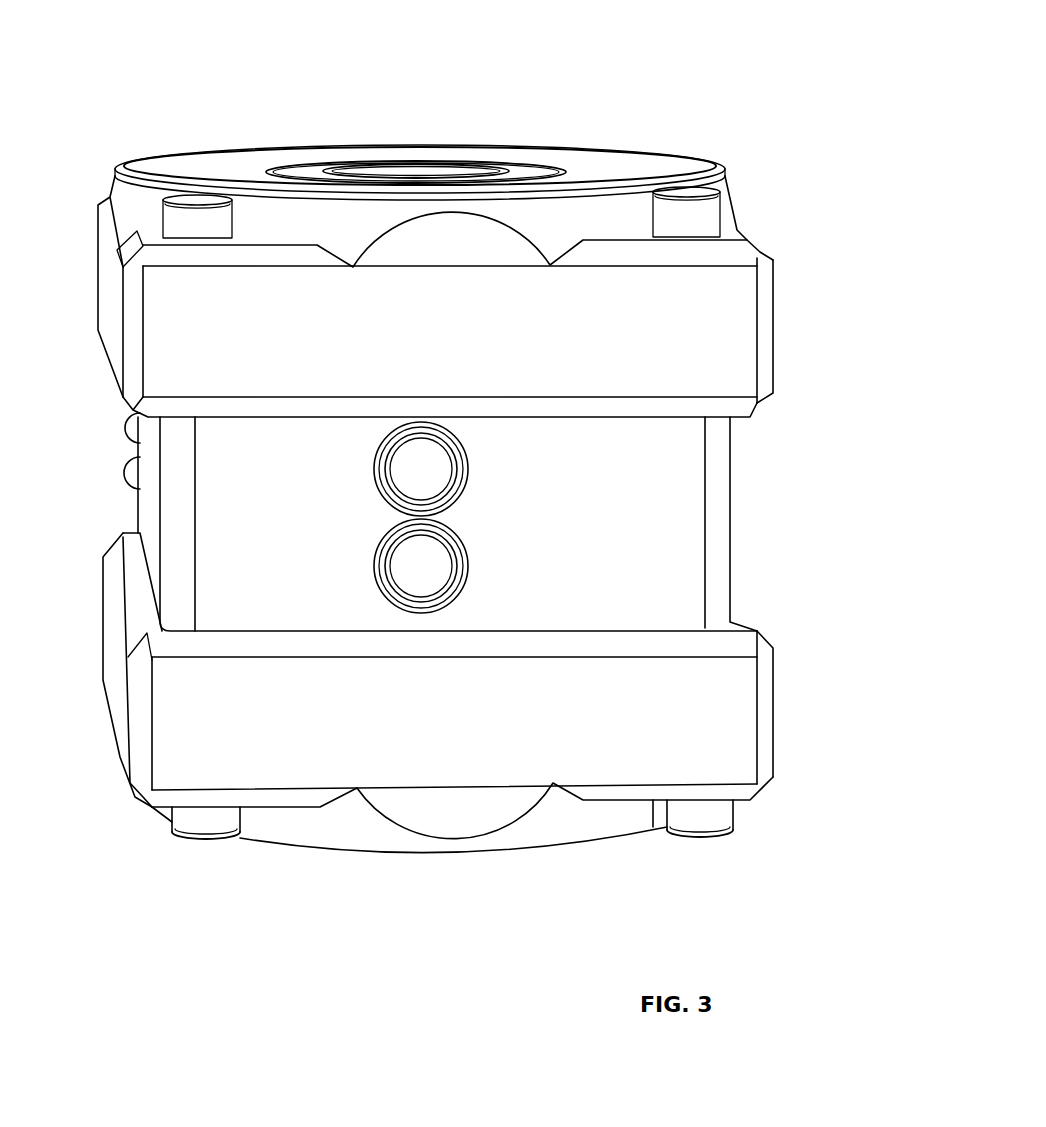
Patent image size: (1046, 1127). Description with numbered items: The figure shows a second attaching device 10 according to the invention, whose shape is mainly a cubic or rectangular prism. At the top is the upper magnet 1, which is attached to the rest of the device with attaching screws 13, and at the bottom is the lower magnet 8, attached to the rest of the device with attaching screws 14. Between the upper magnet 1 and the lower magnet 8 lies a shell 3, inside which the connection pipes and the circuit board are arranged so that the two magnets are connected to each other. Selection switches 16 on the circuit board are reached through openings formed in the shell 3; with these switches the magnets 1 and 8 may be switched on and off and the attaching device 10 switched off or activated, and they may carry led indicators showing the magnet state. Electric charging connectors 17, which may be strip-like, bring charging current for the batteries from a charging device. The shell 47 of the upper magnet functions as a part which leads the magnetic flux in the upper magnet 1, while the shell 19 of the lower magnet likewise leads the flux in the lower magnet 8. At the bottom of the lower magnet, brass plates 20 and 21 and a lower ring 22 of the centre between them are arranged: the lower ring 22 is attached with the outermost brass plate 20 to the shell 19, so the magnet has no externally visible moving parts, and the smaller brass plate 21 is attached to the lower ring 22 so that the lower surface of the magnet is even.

The attaching device 10 is at (692, 103).
The upper magnet 1 is at (742, 288).
The shell 3 is at (676, 527).
The lower magnet 8 is at (737, 700).
The attaching screws 13 is at (710, 192).
The attaching screws 14 is at (700, 842).
The selection switches 16 is at (443, 565).
The electric charging connectors 17 is at (127, 468).
The shell of the lower magnet 19 is at (740, 755).
The brass plate 20 is at (213, 173).
The brass plate 21 is at (417, 173).
The lower ring of the centre 22 is at (307, 173).
The shell of the upper magnet 47 is at (733, 355).